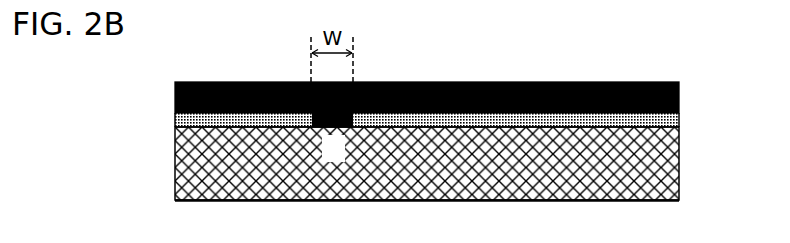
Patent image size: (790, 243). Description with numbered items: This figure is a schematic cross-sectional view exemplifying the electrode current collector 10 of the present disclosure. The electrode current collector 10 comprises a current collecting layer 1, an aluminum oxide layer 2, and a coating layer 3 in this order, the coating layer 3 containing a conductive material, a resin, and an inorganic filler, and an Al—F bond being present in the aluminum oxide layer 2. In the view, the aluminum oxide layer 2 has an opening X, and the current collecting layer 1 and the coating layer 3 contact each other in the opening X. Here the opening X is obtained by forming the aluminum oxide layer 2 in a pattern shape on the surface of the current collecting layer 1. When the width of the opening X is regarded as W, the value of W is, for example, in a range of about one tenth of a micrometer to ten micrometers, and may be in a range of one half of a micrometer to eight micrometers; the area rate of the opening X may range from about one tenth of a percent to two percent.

The current collecting layer 1 is at (665, 166).
The aluminum oxide layer 2 is at (679, 120).
The coating layer 3 is at (679, 97).
The electrode current collector 10 is at (648, 55).